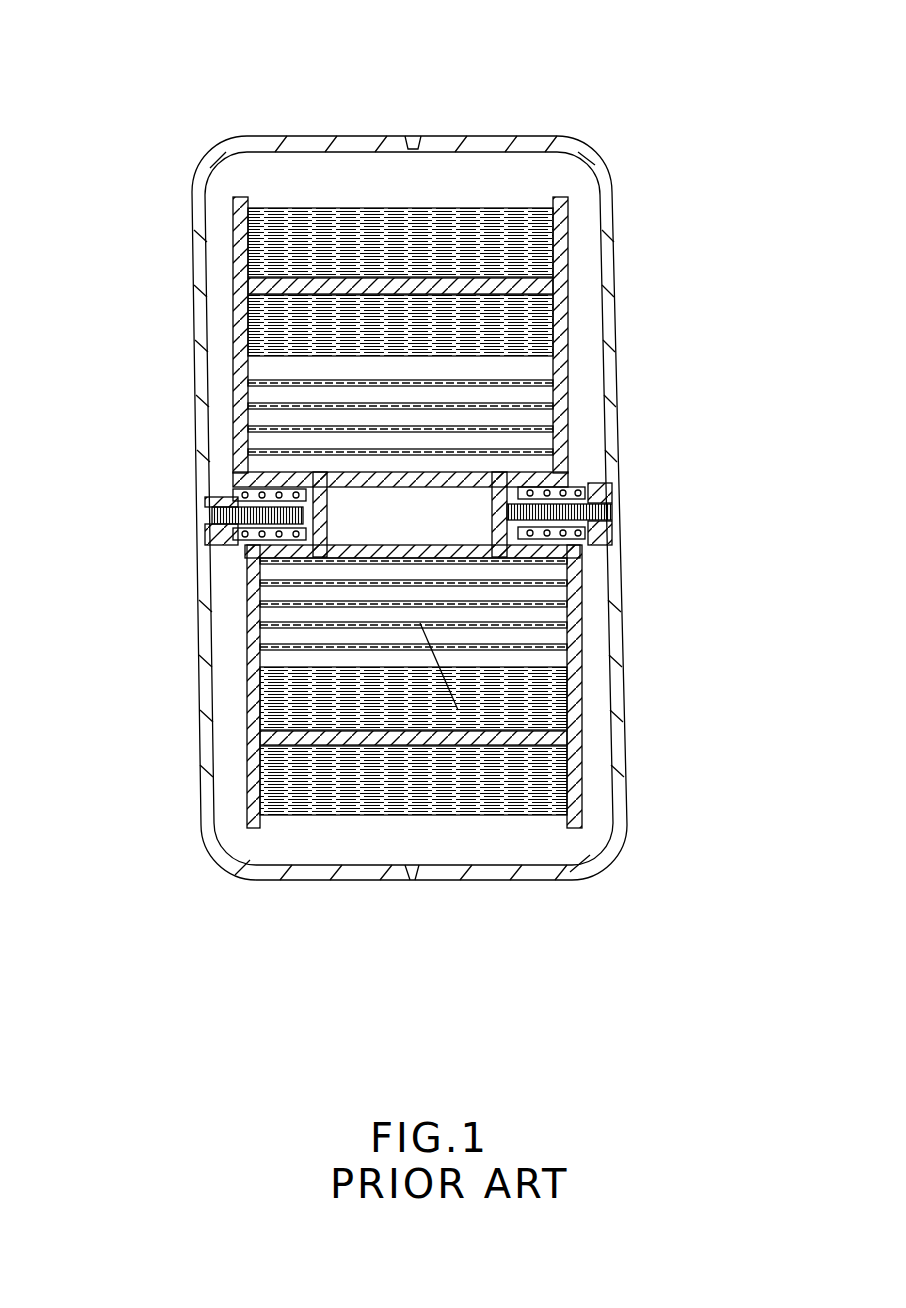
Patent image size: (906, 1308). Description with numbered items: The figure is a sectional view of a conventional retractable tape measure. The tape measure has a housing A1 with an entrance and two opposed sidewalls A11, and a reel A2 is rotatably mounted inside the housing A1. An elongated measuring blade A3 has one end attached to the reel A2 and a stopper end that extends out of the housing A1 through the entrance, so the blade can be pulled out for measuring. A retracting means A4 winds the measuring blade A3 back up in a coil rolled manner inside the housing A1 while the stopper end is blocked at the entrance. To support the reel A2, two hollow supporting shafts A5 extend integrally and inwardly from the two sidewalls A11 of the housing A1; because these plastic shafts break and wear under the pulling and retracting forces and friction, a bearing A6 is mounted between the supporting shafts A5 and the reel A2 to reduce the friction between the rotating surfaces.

The housing A1 is at (490, 136).
The sidewalls A11 is at (195, 318).
The reel A2 is at (565, 405).
The measuring blade A3 is at (462, 222).
The retracting means A4 is at (565, 785).
The supporting shafts A5 is at (262, 527).
The bearing A6 is at (230, 493).